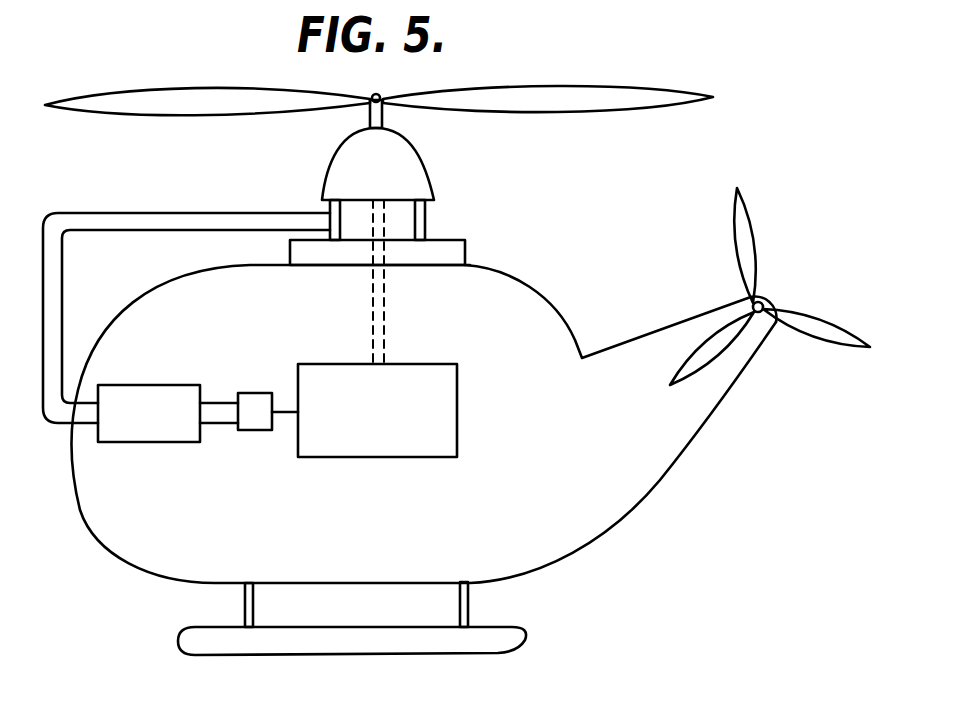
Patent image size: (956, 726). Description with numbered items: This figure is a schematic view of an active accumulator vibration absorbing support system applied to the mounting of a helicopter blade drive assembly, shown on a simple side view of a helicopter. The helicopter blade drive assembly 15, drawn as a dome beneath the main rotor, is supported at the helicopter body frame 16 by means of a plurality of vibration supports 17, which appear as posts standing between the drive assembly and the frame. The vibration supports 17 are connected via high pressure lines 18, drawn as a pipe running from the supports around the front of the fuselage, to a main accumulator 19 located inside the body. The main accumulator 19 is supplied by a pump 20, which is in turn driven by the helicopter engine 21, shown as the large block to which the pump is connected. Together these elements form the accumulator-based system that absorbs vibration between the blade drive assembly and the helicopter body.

The helicopter blade drive assembly 15 is at (413, 168).
The helicopter body frame 16 is at (466, 252).
The vibration supports 17 is at (410, 218).
The high pressure lines 18 is at (110, 214).
The main accumulator 19 is at (145, 385).
The pump 20 is at (252, 393).
The helicopter engine 21 is at (425, 362).